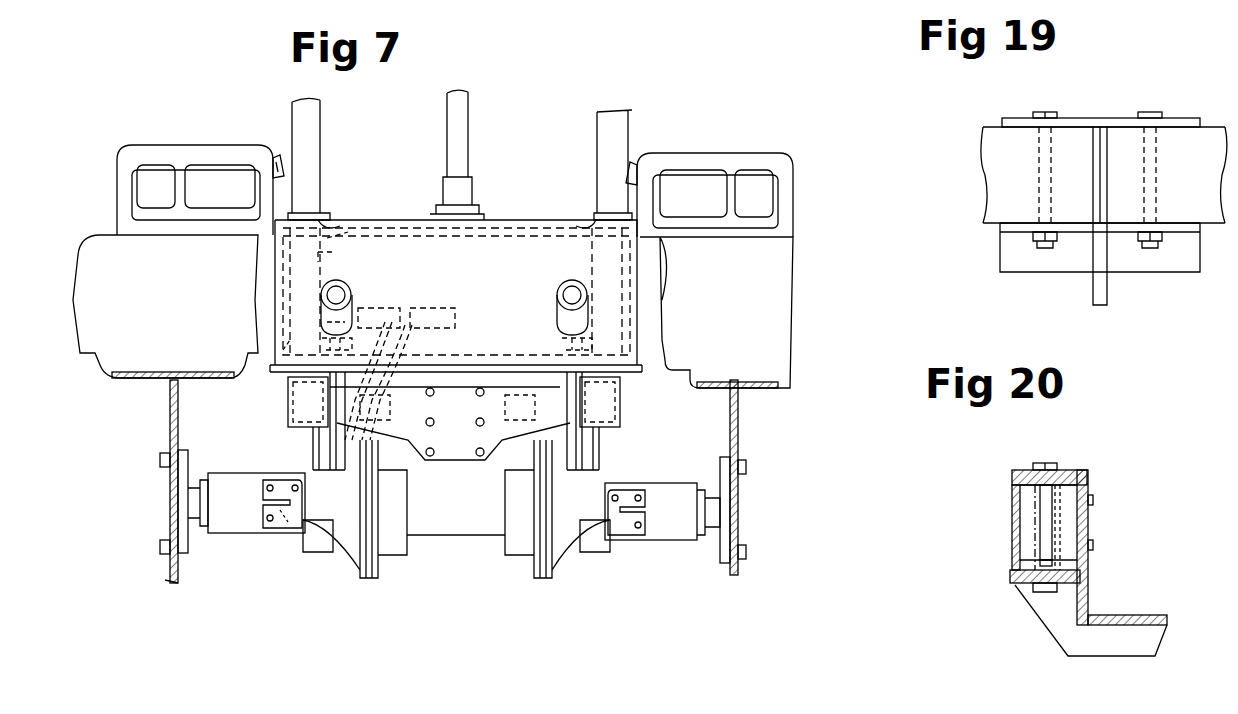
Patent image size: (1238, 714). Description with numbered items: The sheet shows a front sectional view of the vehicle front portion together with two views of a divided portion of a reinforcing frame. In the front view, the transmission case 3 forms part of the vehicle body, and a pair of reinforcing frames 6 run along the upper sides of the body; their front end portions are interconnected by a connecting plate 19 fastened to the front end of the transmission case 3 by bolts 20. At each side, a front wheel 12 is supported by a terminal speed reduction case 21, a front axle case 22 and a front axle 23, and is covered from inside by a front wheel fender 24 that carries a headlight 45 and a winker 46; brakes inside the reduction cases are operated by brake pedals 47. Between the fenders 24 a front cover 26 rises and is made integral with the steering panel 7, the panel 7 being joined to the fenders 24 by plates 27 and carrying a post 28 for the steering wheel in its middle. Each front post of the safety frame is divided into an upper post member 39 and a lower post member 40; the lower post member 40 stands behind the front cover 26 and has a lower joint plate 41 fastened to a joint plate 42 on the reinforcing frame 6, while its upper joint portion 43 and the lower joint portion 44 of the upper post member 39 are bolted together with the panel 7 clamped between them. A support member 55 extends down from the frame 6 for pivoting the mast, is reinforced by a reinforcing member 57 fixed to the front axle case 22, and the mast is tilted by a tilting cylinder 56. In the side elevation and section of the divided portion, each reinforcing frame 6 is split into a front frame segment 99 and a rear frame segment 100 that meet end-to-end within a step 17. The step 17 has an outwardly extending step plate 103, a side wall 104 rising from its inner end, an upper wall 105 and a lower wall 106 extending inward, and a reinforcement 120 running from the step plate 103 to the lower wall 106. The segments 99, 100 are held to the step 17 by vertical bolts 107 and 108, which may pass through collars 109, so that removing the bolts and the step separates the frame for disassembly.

In FIG. 7, the transmission case 3 is at (465, 535).
In FIG. 7, the reinforcing frame 6 is at (288, 400).
In FIG. 7, the steering panel 7 is at (494, 220).
In FIG. 7, the front wheel 12 is at (120, 380).
In FIG. 19, the step 17 is at (1038, 283).
In FIG. 20, the step 17 is at (1122, 599).
In FIG. 7, the connecting plate 19 is at (465, 462).
In FIG. 7, the bolts 20 is at (482, 388).
In FIG. 7, the terminal speed reduction case 21 is at (395, 548).
In FIG. 7, the front axle case 22 is at (228, 478).
In FIG. 7, the front axle 23 is at (195, 505).
In FIG. 7, the front wheel fender 24 is at (228, 156).
In FIG. 7, the front cover 26 is at (418, 240).
In FIG. 7, the plates 27 is at (278, 158).
In FIG. 7, the post 28 is at (462, 142).
In FIG. 7, the upper post member 39 is at (310, 142).
In FIG. 7, the lower post member 40 is at (335, 252).
In FIG. 7, the lower joint plate 41 is at (290, 345).
In FIG. 7, the joint plate 42 is at (290, 365).
In FIG. 7, the upper joint portion 43 is at (345, 228).
In FIG. 7, the lower joint portion 44 is at (330, 220).
In FIG. 7, the headlight 45 is at (210, 178).
In FIG. 7, the winker 46 is at (150, 172).
In FIG. 7, the brake pedals 47 is at (412, 312).
In FIG. 7, the support member 55 is at (335, 500).
In FIG. 7, the tilting cylinder 56 is at (352, 292).
In FIG. 7, the reinforcing member 57 is at (290, 528).
In FIG. 19, the front frame segment 99 is at (1068, 142).
In FIG. 20, the front frame segment 99 is at (1082, 568).
In FIG. 19, the rear frame segment 100 is at (1118, 140).
In FIG. 20, the step plate 103 is at (1145, 620).
In FIG. 19, the side wall 104 is at (1180, 268).
In FIG. 20, the side wall 104 is at (1086, 530).
In FIG. 19, the upper wall 105 is at (1020, 118).
In FIG. 20, the upper wall 105 is at (1077, 472).
In FIG. 19, the lower wall 106 is at (1080, 226).
In FIG. 20, the lower wall 106 is at (1020, 588).
In FIG. 19, the bolt 107 is at (1045, 112).
In FIG. 20, the bolt 107 is at (1045, 463).
In FIG. 19, the bolt 108 is at (1160, 112).
In FIG. 20, the collar 109 is at (1035, 520).
In FIG. 19, the reinforcement 120 is at (1098, 308).
In FIG. 20, the reinforcement 120 is at (1068, 640).